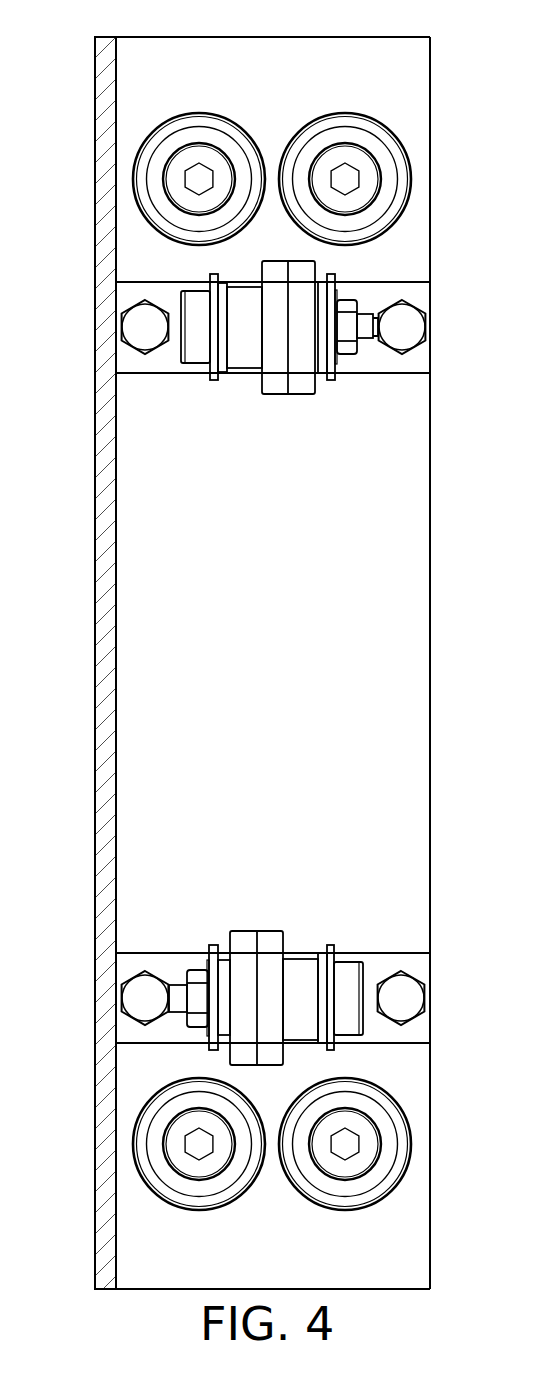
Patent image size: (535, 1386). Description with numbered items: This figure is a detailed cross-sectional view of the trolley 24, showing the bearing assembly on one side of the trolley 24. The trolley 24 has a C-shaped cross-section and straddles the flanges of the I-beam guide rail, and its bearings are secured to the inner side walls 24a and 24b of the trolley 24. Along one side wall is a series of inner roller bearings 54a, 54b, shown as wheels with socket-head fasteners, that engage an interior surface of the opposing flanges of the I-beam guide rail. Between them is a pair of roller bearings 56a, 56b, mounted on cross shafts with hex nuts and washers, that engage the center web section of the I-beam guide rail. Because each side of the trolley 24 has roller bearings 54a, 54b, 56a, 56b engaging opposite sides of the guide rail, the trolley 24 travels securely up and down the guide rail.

The trolley 24 is at (441, 58).
The inner side wall 24a is at (106, 105).
The inner side wall 24b is at (390, 96).
The inner roller bearing 54a is at (152, 226).
The inner roller bearing 54b is at (393, 225).
The roller bearing 56a is at (302, 395).
The roller bearing 56b is at (243, 931).